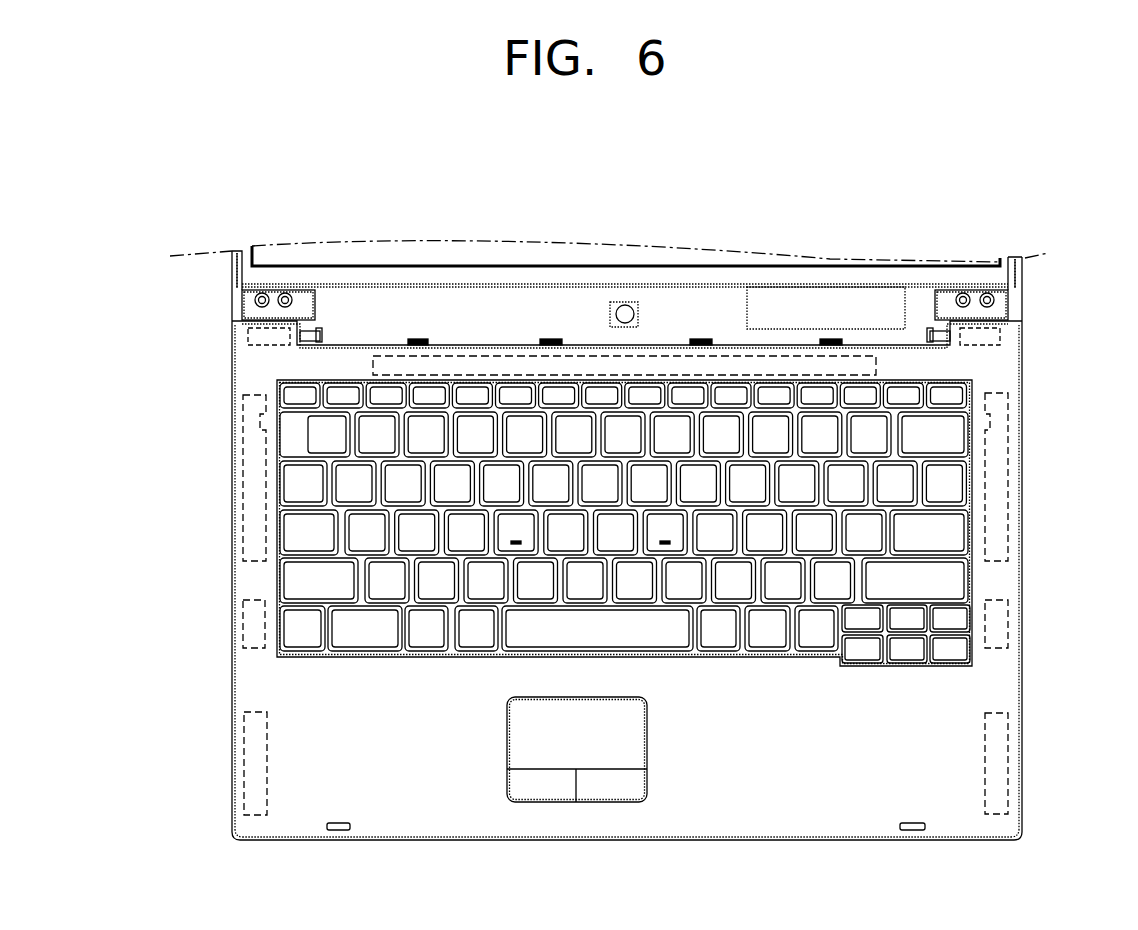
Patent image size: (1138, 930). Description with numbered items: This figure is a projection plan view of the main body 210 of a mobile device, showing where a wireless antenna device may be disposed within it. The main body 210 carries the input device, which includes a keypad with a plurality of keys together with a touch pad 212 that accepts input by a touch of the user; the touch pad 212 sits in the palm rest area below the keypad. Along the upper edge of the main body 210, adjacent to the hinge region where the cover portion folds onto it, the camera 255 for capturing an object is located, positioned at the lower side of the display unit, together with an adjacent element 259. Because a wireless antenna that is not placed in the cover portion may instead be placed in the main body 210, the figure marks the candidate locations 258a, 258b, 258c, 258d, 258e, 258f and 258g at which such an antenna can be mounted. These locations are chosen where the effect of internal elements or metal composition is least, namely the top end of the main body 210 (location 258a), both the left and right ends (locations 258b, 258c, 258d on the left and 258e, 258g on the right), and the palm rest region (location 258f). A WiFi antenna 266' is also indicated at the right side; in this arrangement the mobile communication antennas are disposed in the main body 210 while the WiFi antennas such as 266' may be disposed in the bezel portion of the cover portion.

The main body 210 is at (1024, 291).
The touch pad 212 is at (545, 745).
The camera 255 is at (625, 305).
The hinge cover panel 259 is at (857, 305).
The wireless antenna mounting location 258a is at (373, 365).
The wireless antenna mounting location 258b is at (243, 477).
The wireless antenna mounting location 258c is at (243, 625).
The wireless antenna mounting location 258d is at (244, 757).
The wireless antenna mounting location 258e is at (1008, 758).
The wireless antenna mounting location 258f is at (955, 577).
The wireless antenna mounting location 258g is at (1008, 447).
The WiFi antenna 266' is at (1043, 624).